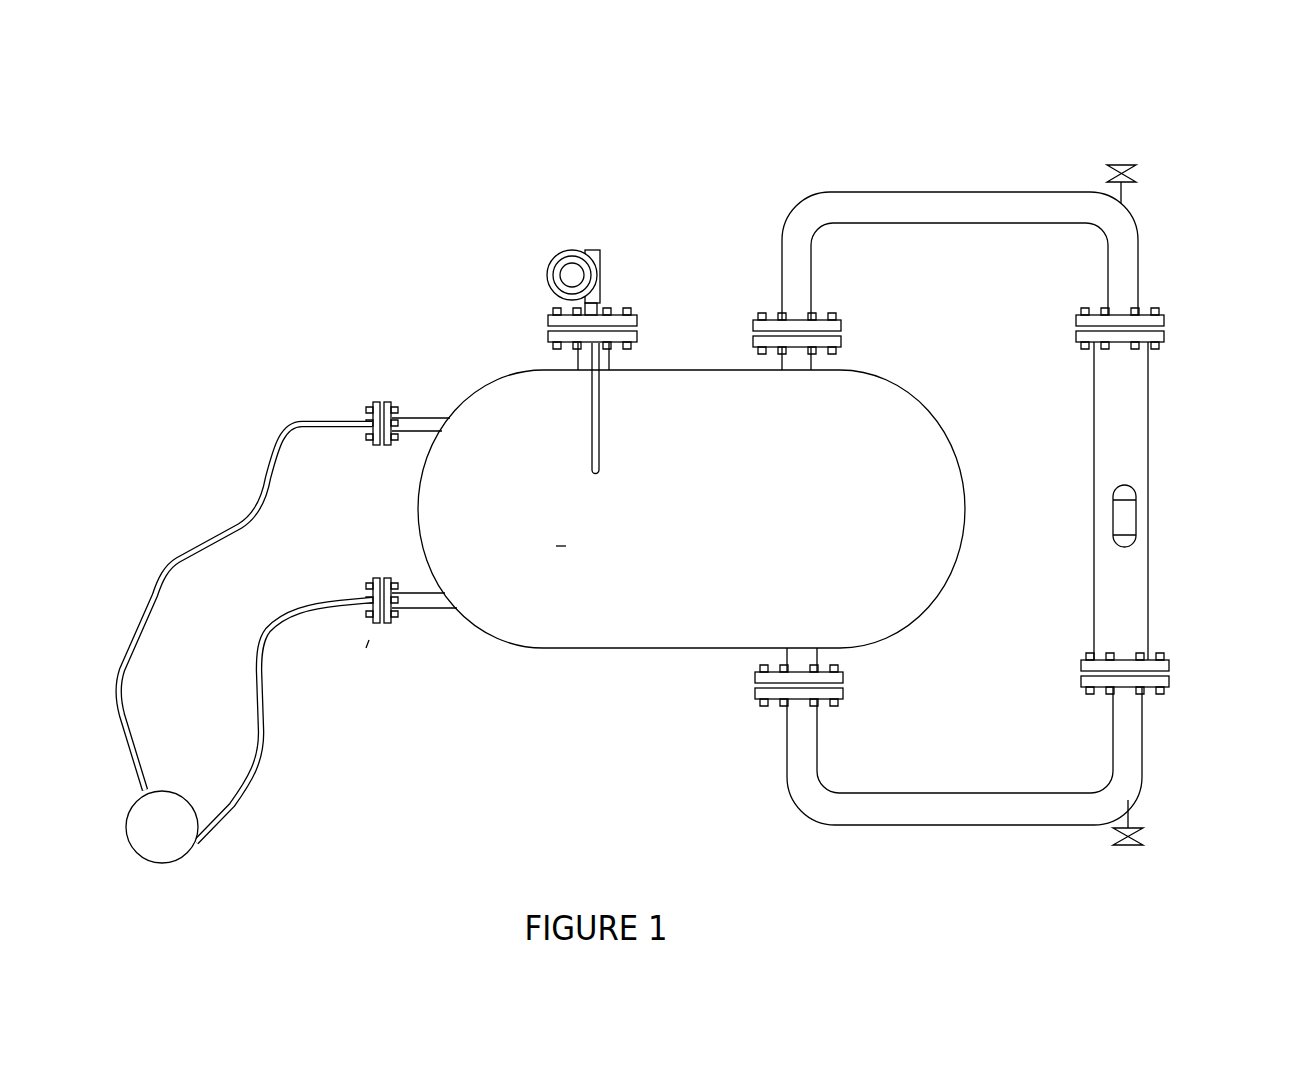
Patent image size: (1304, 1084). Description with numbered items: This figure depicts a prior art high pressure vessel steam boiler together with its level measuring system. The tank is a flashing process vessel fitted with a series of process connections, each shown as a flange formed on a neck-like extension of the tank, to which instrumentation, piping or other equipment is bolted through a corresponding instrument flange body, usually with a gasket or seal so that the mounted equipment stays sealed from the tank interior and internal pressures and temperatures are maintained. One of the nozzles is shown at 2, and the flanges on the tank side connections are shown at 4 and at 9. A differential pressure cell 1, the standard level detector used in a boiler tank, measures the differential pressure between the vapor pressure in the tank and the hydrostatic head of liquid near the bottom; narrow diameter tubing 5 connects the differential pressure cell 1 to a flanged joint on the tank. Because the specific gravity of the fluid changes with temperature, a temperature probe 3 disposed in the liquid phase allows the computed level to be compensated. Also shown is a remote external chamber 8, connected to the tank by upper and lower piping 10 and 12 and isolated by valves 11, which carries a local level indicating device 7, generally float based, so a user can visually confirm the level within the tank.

The differential pressure cell 1 is at (175, 787).
The vessel nozzle 2 is at (577, 361).
The temperature sensor 3 is at (546, 283).
The nozzle flanges 4 is at (372, 402).
The narrow diameter tubing 5 is at (163, 565).
The sight glass 7 is at (1110, 522).
The column / level chamber 8 is at (1150, 445).
The flanges 9 is at (845, 330).
The upper pipe loop 10 is at (900, 190).
The valves 11 is at (1124, 162).
The inner pipe wall 12 is at (954, 224).